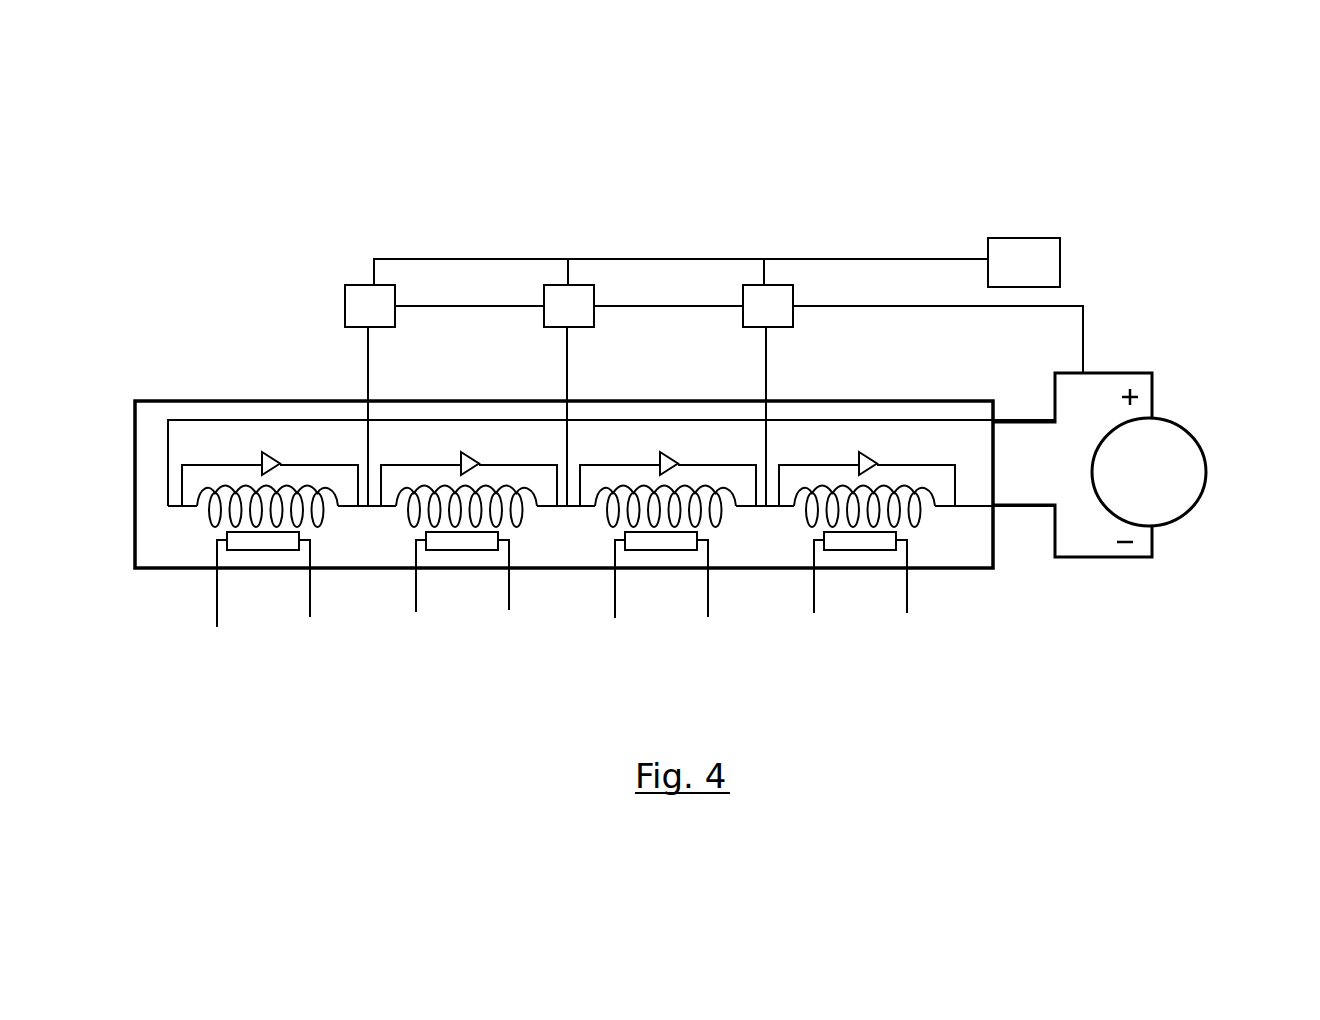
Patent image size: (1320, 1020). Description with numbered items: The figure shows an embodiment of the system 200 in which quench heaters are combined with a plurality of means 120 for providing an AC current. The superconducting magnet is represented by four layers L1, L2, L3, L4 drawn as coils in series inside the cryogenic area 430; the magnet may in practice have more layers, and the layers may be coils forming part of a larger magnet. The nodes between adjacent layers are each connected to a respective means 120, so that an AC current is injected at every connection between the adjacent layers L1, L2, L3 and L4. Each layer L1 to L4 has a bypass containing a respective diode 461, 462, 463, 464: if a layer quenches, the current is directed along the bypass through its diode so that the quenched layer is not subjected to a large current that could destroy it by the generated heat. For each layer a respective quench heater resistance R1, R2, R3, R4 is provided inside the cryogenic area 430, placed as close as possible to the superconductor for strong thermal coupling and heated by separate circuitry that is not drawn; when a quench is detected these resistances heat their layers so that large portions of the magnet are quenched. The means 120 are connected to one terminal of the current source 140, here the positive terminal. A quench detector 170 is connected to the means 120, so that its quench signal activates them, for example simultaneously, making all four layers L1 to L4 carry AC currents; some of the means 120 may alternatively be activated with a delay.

The system 200 is at (311, 199).
The cryogenic area 430 is at (197, 400).
The means for providing an AC current 120 is at (740, 295).
The quench detector 170 is at (1045, 270).
The current source 140 is at (1200, 502).
The diode 461 is at (277, 448).
The diode 462 is at (445, 407).
The diode 463 is at (646, 408).
The diode 464 is at (845, 409).
The layer L1 is at (330, 517).
The layer L2 is at (499, 558).
The layer L3 is at (687, 558).
The layer L4 is at (893, 558).
The quench heater resistance R1 is at (253, 550).
The quench heater resistance R2 is at (462, 593).
The quench heater resistance R3 is at (661, 593).
The quench heater resistance R4 is at (860, 592).